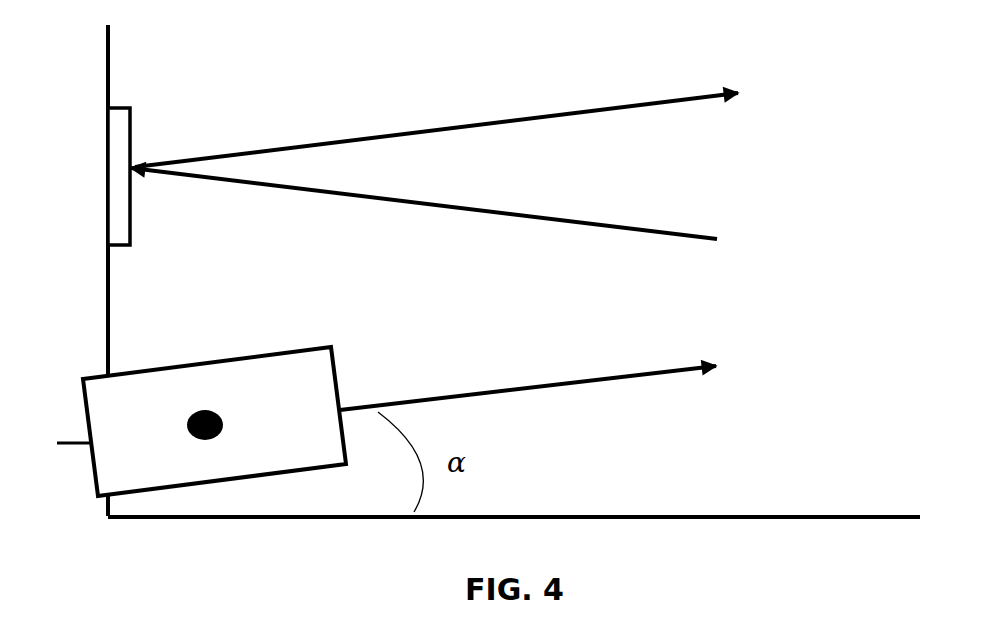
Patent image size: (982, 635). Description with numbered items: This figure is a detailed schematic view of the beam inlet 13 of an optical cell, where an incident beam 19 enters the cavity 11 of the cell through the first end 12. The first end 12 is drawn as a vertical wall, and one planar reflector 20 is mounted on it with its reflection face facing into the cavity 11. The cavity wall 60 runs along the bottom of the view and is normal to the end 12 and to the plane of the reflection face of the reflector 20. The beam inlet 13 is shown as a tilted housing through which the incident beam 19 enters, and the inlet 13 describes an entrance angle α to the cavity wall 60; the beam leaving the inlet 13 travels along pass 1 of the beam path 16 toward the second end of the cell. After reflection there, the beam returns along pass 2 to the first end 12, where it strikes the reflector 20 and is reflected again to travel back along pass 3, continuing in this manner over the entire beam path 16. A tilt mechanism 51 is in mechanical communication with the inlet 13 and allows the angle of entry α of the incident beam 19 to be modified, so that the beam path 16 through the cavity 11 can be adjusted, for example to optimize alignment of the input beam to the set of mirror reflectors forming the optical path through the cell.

The pass 1 is at (622, 380).
The pass 2 is at (560, 222).
The pass 3 is at (515, 120).
The cavity 11 is at (337, 269).
The first end 12 is at (108, 67).
The beam inlet 13 is at (108, 455).
The beam path 16 is at (690, 97).
The incident beam 19 is at (78, 440).
The reflector 20 is at (130, 138).
The tilt mechanism 51 is at (222, 425).
The cavity wall 60 is at (640, 518).